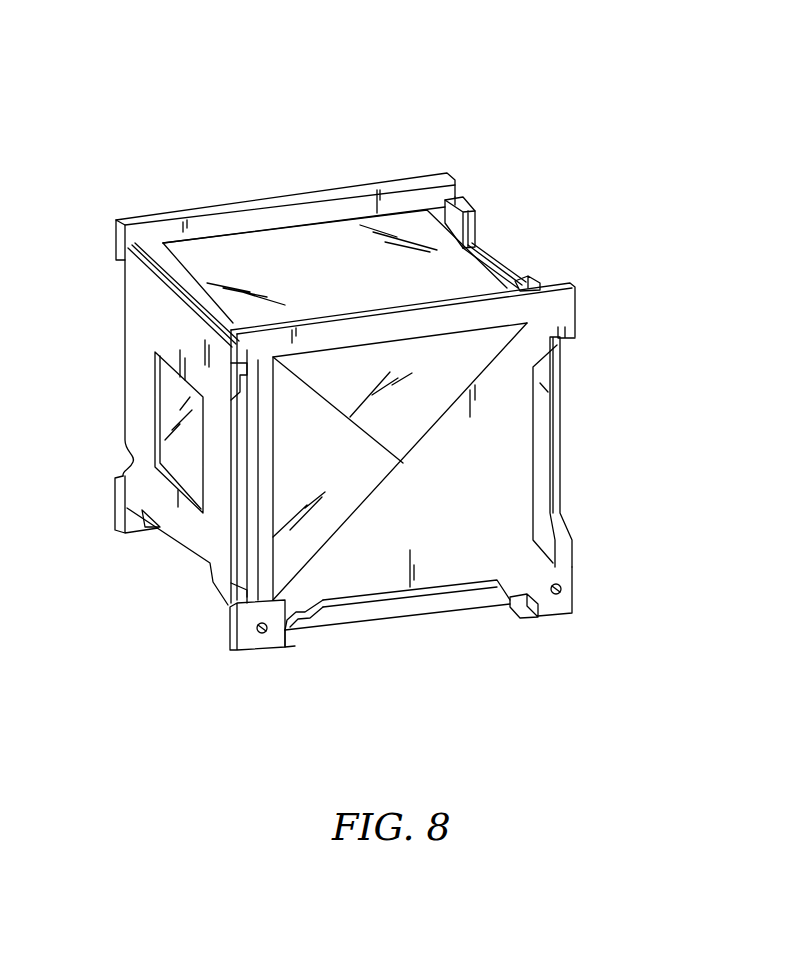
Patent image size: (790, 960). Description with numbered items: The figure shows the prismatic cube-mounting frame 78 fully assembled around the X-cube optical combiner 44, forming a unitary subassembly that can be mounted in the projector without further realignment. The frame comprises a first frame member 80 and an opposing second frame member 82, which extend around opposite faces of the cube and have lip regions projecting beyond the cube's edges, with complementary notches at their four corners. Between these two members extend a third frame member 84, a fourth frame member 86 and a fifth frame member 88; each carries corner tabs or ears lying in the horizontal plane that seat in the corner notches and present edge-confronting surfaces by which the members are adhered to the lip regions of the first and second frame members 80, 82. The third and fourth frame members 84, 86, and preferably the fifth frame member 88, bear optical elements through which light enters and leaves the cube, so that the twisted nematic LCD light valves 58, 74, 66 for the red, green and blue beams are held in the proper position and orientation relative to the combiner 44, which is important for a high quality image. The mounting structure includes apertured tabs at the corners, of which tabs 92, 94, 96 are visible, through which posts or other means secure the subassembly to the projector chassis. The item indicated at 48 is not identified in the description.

The prismatic cube-mounting frame 78 is at (311, 168).
The second frame member 82 is at (235, 220).
The optical combiner 44 is at (322, 279).
The light valve 66 is at (527, 221).
The fifth frame member 88 is at (498, 268).
The light valve 58 is at (127, 424).
The apertured tab 96 is at (142, 530).
The first frame member 80 is at (398, 451).
The third frame member 84 is at (210, 563).
The apertured tab 92 is at (568, 602).
The bottom assembly 48 is at (384, 681).
The apertured tab 94 is at (263, 648).
The fourth frame member 86 is at (397, 607).
The light valve 74 is at (473, 626).